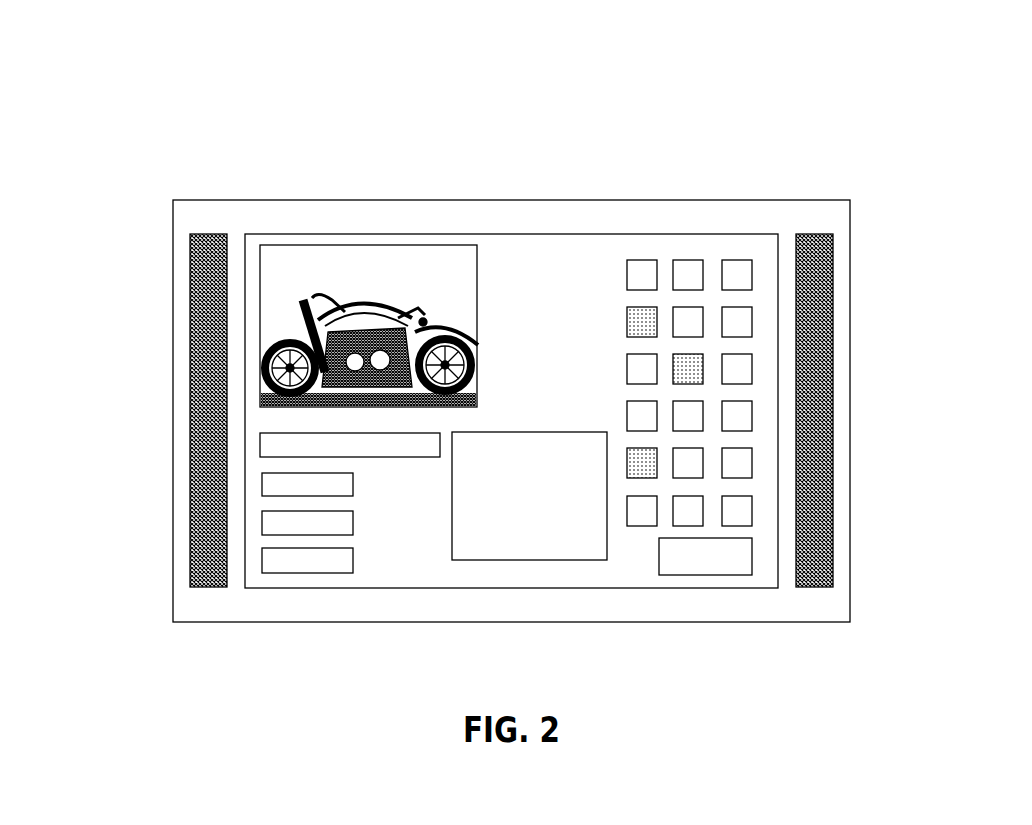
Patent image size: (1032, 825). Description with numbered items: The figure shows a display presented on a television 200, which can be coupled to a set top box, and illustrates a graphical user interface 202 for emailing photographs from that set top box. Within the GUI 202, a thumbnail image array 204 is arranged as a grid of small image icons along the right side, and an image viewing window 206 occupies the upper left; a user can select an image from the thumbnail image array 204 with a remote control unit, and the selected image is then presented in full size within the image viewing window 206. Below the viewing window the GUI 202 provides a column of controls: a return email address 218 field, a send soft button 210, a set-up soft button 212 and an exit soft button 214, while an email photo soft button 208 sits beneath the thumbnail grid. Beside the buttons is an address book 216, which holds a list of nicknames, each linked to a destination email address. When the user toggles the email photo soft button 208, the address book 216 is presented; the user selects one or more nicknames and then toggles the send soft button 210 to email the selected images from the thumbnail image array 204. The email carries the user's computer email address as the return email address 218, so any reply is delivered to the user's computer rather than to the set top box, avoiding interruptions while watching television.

The television 200 is at (740, 136).
The graphical user interface 202 is at (235, 307).
The thumbnail image array 204 is at (738, 260).
The image viewing window 206 is at (367, 245).
The email photo soft button 208 is at (703, 575).
The send soft button 210 is at (262, 483).
The set-up soft button 212 is at (262, 520).
The exit soft button 214 is at (262, 558).
The address book 216 is at (528, 560).
The return email address 218 is at (260, 440).